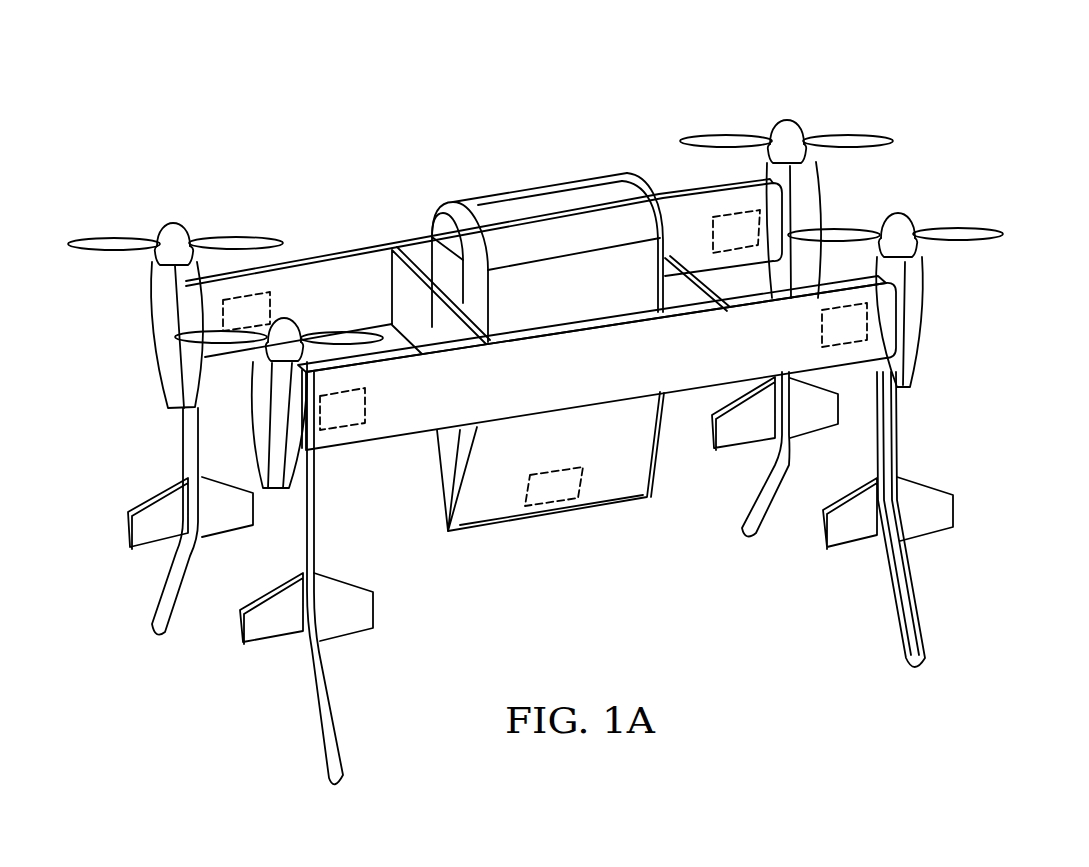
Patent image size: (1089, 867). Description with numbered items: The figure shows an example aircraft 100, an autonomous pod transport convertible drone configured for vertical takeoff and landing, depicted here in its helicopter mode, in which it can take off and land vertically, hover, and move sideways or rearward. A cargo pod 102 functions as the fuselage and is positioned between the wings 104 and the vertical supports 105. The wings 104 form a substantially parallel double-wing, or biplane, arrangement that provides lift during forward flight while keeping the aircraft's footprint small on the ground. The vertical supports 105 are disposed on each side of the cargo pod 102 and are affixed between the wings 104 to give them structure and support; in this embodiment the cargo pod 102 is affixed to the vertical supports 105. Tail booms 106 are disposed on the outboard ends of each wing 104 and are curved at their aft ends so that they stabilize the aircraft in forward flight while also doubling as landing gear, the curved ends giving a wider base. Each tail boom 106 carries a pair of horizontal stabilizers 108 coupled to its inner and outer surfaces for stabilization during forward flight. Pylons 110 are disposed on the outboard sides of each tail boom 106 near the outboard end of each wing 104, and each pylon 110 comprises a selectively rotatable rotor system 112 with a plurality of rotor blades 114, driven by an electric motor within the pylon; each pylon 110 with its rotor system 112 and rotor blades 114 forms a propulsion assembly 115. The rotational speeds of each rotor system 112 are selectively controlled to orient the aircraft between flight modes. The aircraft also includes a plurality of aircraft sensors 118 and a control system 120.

The aircraft 100 is at (401, 108).
The cargo pod 102 is at (528, 197).
The wings 104 is at (400, 238).
The vertical supports 105 is at (685, 302).
The tail booms 106 is at (157, 617).
The horizontal stabilizers 108 is at (145, 542).
The pylons 110 is at (155, 332).
The rotor system 112 is at (173, 226).
The rotor blades 114 is at (94, 240).
The propulsion assembly 115 is at (124, 187).
The aircraft sensors 118 is at (220, 310).
The control system 120 is at (543, 506).